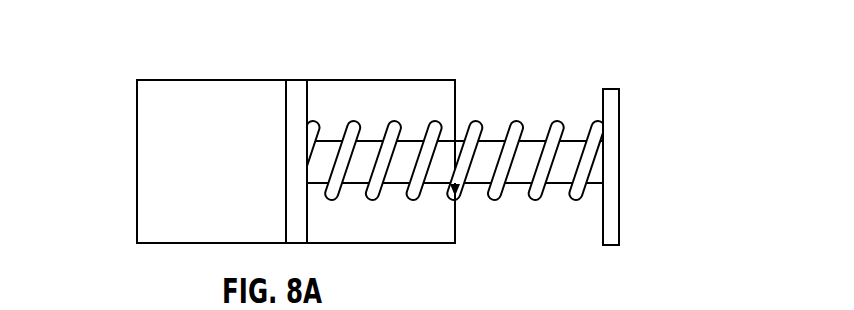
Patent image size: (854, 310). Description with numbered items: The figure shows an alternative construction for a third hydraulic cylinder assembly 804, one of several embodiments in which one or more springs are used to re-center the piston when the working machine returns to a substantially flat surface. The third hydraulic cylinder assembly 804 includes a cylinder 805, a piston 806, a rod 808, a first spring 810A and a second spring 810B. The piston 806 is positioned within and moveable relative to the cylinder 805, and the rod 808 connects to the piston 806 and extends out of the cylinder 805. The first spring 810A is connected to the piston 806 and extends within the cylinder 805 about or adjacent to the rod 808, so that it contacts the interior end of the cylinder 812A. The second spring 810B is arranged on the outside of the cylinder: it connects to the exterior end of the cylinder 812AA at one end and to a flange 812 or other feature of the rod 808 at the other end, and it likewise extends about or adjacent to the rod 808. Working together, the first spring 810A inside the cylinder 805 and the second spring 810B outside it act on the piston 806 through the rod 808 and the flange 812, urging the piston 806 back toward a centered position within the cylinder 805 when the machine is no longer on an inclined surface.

The third hydraulic cylinder assembly 804 is at (118, 39).
The cylinder 805 is at (137, 128).
The piston 806 is at (299, 92).
The rod 808 is at (558, 178).
The first spring 810A is at (352, 119).
The second spring 810B is at (556, 119).
The flange 812 is at (620, 120).
The interior end of the cylinder 812A is at (455, 217).
The exterior end of the cylinder 812AA is at (455, 107).